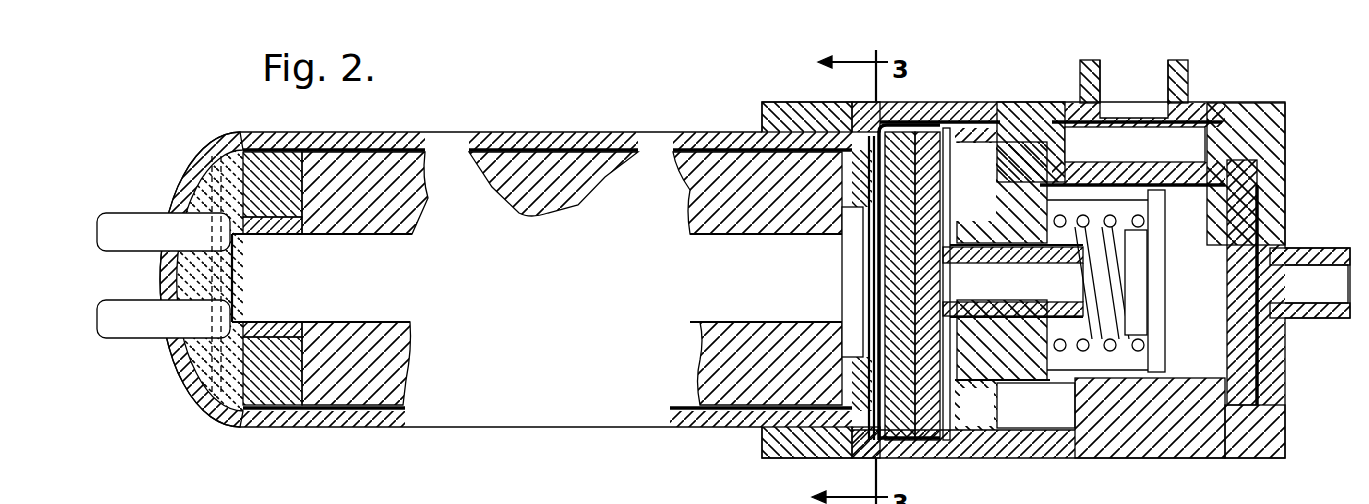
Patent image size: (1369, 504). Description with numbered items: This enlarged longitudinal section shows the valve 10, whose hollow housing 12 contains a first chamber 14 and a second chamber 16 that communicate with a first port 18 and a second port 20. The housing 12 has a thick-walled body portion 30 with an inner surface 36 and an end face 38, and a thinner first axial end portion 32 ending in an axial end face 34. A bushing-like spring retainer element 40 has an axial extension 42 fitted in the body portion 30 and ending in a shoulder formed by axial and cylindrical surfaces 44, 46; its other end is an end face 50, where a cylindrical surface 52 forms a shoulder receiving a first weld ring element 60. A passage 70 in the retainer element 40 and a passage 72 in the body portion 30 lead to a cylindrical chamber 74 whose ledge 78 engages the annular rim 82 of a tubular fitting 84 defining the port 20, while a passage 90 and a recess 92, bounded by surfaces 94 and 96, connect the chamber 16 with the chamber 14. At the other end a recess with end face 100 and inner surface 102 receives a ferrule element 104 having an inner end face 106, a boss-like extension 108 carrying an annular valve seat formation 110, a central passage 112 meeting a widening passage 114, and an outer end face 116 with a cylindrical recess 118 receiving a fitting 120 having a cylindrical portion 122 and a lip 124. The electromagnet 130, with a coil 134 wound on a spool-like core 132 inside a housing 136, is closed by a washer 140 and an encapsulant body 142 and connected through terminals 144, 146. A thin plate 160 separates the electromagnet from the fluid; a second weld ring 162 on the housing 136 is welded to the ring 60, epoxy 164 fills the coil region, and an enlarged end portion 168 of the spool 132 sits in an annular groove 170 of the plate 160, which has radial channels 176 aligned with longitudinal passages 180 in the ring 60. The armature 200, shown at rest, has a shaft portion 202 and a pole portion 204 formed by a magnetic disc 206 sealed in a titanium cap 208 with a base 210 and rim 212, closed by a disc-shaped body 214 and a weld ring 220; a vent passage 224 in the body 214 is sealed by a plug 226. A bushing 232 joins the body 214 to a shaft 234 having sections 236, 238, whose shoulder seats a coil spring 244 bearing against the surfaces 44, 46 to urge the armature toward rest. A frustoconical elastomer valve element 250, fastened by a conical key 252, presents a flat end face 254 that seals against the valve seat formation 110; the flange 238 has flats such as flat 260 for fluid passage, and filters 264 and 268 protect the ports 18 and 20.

The valve 10 is at (731, 64).
The housing 12 is at (1048, 100).
The first chamber 14 is at (1285, 158).
The second chamber 16 is at (992, 102).
The first port 18 is at (1295, 248).
The second port 20 is at (1180, 61).
The body portion 30 is at (1262, 102).
The first axial end portion 32 is at (1285, 131).
The axial end face 34 is at (1288, 103).
The inner surface 36 is at (1165, 195).
The end face 38 is at (1020, 101).
The spring retainer element 40 is at (1028, 225).
The axial extension 42 is at (1075, 205).
The axial surface 44 is at (1110, 219).
The cylindrical surface 46 is at (1136, 219).
The axial end face 50 is at (974, 396).
The cylindrical surface 52 is at (999, 446).
The first weld ring element 60 is at (947, 126).
The first longitudinal passage 70 is at (952, 168).
The second longitudinal passage 72 is at (1031, 142).
The cylindrical chamber 74 is at (1112, 149).
The ledge 78 is at (1238, 101).
The annular rim 82 is at (1060, 102).
The tubular fitting 84 is at (1081, 102).
The longitudinal passage 90 is at (974, 418).
The recess 92 is at (1025, 428).
The axially extending surface 94 is at (1046, 421).
The radially extending surface 96 is at (1068, 392).
The inner annular end face 100 is at (1215, 395).
The inner surface 102 is at (1230, 415).
The ferrule element 104 is at (1262, 398).
The inner axial end face 106 is at (1270, 355).
The boss-like axial extension 108 is at (1275, 372).
The annular valve seat formation 110 is at (1275, 392).
The central passage 112 is at (1294, 298).
The passage 114 is at (1294, 280).
The outer axial end face 116 is at (1262, 184).
The cylindrical recess 118 is at (1258, 200).
The fitting 120 is at (1290, 212).
The cylindrical portion 122 is at (1302, 250).
The annular lip 124 is at (1260, 236).
The electromagnet 130 is at (448, 133).
The core 132 is at (762, 263).
The coil 134 is at (760, 205).
The magnet housing 136 is at (548, 131).
The washer 140 is at (290, 395).
The body of encapsulant 142 is at (190, 175).
The terminal 144 is at (133, 212).
The terminal 146 is at (128, 339).
The barrier plate 160 is at (852, 292).
The second weld ring 162 is at (762, 100).
The epoxy material 164 is at (848, 393).
The enlarged annular end portion 168 is at (850, 275).
The annular groove 170 is at (808, 131).
The channel 176 is at (863, 132).
The longitudinally extending passage 180 is at (883, 125).
The armature 200 is at (802, 130).
The shaft portion 202 is at (1068, 278).
The pole portion 204 is at (934, 445).
The disc 206 is at (852, 258).
The thin-walled cap 208 is at (882, 450).
The base 210 is at (845, 372).
The annular rim 212 is at (937, 126).
The disc-shaped body 214 is at (948, 215).
The weld ring 220 is at (966, 126).
The vent passage 224 is at (942, 160).
The plug 226 is at (945, 200).
The bushing 232 is at (965, 272).
The armature shaft 234 is at (1055, 293).
The first section 236 is at (1135, 272).
The second section 238 is at (1140, 300).
The coil spring 244 is at (1155, 381).
The valve element 250 is at (1167, 225).
The conical key 252 is at (1162, 334).
The outer flat axial end face 254 is at (1170, 246).
The flat 260 is at (1156, 188).
The filter 264 is at (1275, 335).
The filter 268 is at (1143, 117).